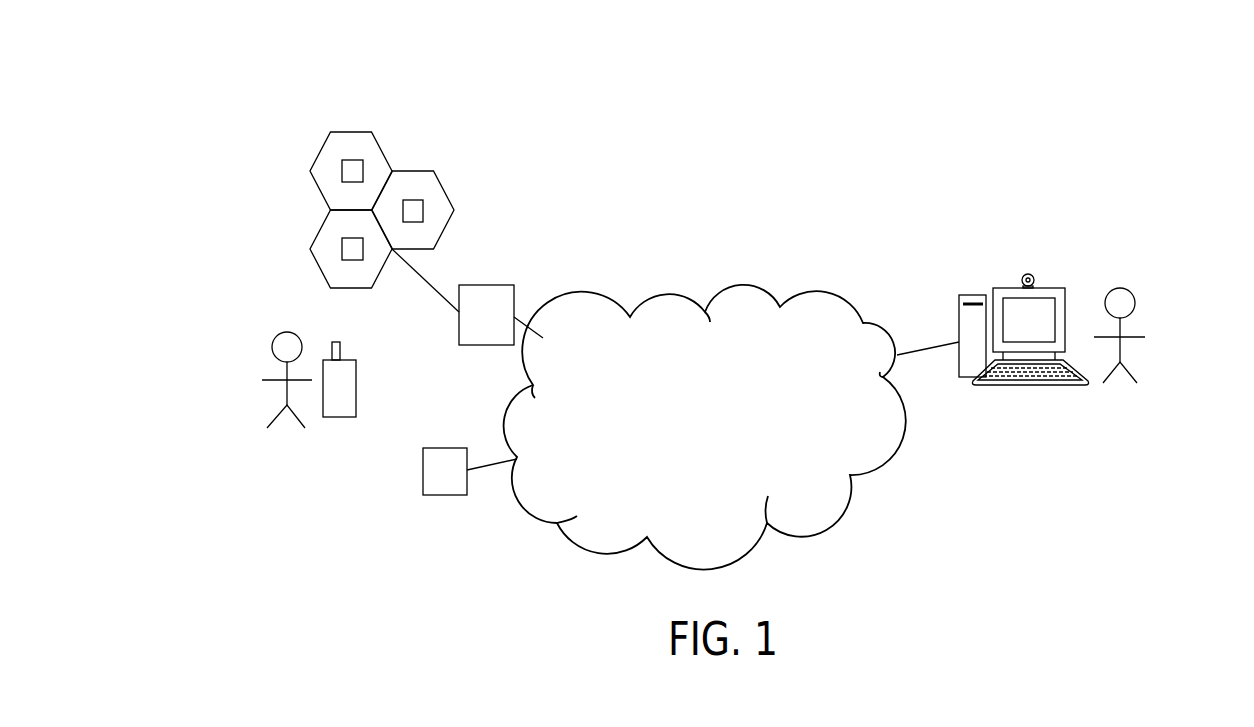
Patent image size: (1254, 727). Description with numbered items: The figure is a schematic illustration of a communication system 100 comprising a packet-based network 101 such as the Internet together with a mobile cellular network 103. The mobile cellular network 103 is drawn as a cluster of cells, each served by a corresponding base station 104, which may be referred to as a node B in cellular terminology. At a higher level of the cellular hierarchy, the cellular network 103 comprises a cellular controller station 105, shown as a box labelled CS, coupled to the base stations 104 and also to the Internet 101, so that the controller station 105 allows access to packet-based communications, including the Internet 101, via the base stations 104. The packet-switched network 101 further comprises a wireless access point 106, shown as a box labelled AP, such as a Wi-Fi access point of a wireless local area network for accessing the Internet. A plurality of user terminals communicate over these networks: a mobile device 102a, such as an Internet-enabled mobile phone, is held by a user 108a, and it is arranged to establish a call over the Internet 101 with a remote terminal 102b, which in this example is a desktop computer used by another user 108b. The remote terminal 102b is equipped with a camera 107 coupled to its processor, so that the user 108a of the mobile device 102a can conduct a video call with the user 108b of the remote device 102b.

The communication system 100 is at (851, 82).
The packet-based network 101 is at (734, 283).
The mobile device 102a is at (338, 418).
The remote terminal 102b is at (1037, 386).
The mobile cellular network 103 is at (351, 132).
The base station 104 is at (423, 211).
The cellular controller station 105 is at (502, 285).
The wireless access point 106 is at (445, 496).
The camera 107 is at (1029, 273).
The user 108a is at (272, 346).
The user 108b is at (1135, 303).